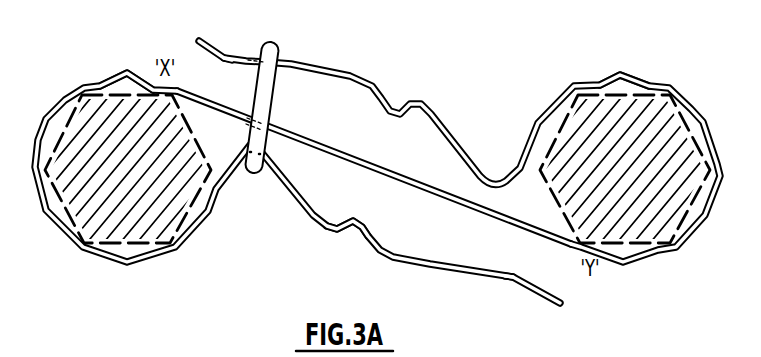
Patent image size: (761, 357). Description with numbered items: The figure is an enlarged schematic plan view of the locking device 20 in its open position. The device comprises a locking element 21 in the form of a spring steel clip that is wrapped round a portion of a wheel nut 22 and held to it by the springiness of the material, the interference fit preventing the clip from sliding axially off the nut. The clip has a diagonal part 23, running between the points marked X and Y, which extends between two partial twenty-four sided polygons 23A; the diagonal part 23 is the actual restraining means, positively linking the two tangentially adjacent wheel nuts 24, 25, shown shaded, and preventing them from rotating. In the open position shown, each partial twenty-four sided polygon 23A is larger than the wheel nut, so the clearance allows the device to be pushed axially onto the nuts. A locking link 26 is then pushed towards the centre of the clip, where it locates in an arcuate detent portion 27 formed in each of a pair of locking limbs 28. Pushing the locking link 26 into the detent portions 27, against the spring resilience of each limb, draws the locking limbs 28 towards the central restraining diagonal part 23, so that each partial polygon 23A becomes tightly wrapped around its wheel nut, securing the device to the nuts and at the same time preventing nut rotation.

The locking device 20 is at (430, 270).
The locking element 21 is at (61, 229).
The wheel nut 22 is at (436, 112).
The diagonal part 23 is at (320, 147).
The partial twenty-four sided polygon 23A is at (61, 109).
The wheel nut 24 is at (150, 229).
The wheel nut 25 is at (688, 178).
The locking link 26 is at (279, 47).
The arcuate detent portion 27 is at (363, 240).
The locking limb 28 is at (217, 50).